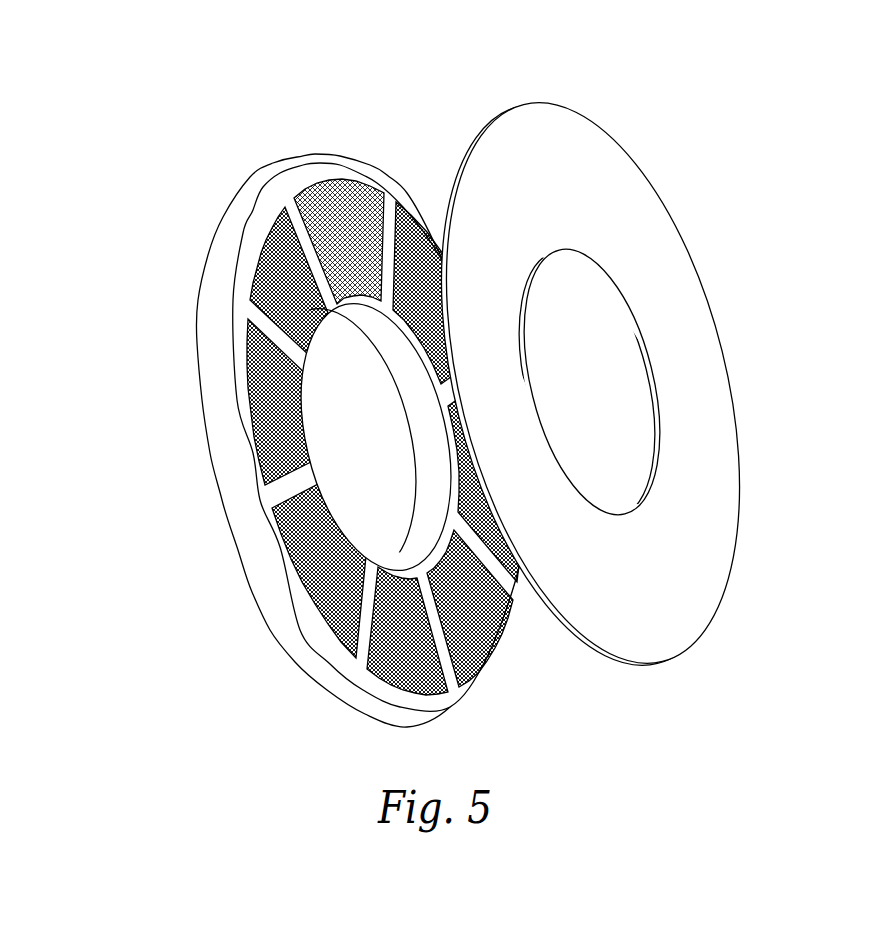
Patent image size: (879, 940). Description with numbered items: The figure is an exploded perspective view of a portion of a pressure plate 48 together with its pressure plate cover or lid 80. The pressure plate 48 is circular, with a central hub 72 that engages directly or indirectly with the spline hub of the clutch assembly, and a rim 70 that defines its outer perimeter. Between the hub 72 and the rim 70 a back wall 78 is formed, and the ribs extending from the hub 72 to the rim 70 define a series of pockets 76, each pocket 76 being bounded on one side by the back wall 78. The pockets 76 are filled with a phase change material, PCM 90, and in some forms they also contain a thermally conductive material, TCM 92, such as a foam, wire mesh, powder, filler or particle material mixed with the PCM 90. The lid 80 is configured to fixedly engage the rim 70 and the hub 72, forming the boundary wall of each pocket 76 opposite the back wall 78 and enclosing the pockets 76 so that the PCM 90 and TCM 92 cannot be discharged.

The pressure plate 48 is at (418, 399).
The rim 70 is at (312, 653).
The hub 72 is at (418, 476).
The pocket 76 is at (285, 572).
The back wall 78 is at (210, 455).
The pressure plate cover or lid 80 is at (677, 310).
The PCM 90 is at (283, 235).
The thermally conductive material (TCM) 92 is at (338, 180).